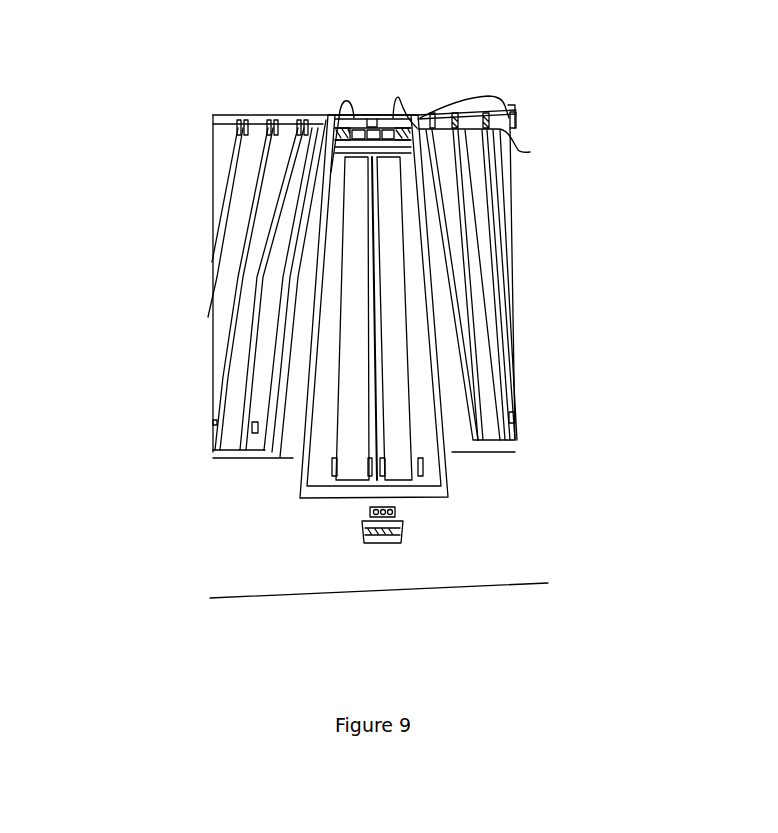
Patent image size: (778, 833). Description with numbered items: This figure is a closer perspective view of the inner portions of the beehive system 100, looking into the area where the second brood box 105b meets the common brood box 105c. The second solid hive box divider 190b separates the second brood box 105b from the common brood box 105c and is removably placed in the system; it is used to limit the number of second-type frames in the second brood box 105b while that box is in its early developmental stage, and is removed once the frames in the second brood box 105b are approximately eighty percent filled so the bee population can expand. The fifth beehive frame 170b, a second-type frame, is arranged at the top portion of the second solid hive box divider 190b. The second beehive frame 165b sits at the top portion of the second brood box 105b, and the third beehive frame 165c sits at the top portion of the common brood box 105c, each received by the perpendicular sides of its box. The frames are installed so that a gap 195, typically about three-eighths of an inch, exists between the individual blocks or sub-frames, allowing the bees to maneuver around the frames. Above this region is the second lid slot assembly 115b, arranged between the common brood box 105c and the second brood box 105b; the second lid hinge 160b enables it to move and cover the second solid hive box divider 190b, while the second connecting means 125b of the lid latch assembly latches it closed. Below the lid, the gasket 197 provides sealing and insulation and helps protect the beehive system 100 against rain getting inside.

The beehive system 100 is at (98, 62).
The second brood box 105b is at (232, 492).
The common brood box 105c is at (487, 478).
The second lid slot assembly 115b is at (512, 108).
The second connecting means 125b is at (398, 528).
The second lid hinge 160b is at (530, 152).
The second beehive frame 165b is at (263, 245).
The third beehive frame 165c is at (473, 320).
The fifth beehive frame 170b is at (400, 292).
The second solid hive box divider 190b is at (378, 258).
The gap 195 is at (320, 303).
The gasket 197 is at (417, 127).